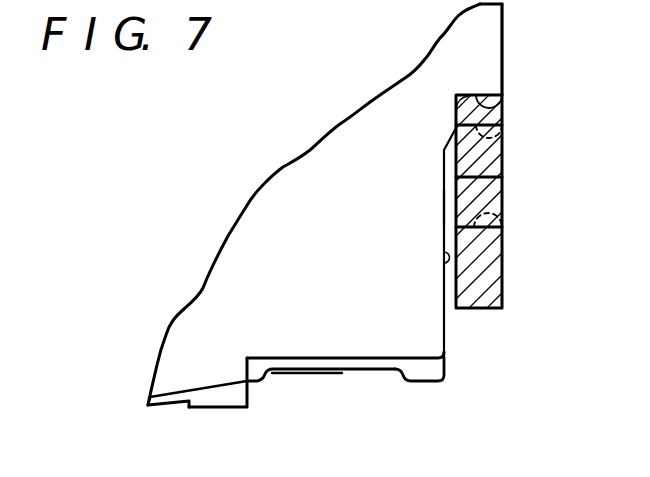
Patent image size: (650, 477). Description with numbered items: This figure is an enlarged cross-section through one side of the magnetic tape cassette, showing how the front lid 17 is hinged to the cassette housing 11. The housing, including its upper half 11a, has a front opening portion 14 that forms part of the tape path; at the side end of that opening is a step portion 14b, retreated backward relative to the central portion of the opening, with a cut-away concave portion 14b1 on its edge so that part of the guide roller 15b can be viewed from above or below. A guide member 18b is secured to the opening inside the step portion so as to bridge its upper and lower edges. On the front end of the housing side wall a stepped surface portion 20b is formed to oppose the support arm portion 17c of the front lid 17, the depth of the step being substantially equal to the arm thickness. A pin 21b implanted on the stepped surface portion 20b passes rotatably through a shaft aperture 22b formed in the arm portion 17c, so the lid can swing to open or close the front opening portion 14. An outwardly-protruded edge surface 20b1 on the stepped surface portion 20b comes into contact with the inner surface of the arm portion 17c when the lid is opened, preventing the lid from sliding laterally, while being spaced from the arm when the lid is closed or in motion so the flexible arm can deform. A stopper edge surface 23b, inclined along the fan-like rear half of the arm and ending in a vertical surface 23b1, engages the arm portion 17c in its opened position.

The cassette housing 11 is at (505, 20).
The upper section or half 11a is at (352, 127).
The front opening portion 14 is at (178, 408).
The step portion 14b is at (422, 384).
The cut-away concave portion 14b1 is at (351, 369).
The guide roller 15b is at (318, 376).
The front lid 17 is at (490, 309).
The support arm portion 17c is at (503, 176).
The guide member 18b is at (222, 409).
The stepped surface portion 20b is at (444, 265).
The outwardly-protruded edge surface 20b1 is at (460, 95).
The shaft or pin 21b is at (445, 208).
The shaft aperture 22b is at (505, 217).
The stopper edge surface 23b is at (507, 125).
The vertical surface 23b1 is at (505, 100).